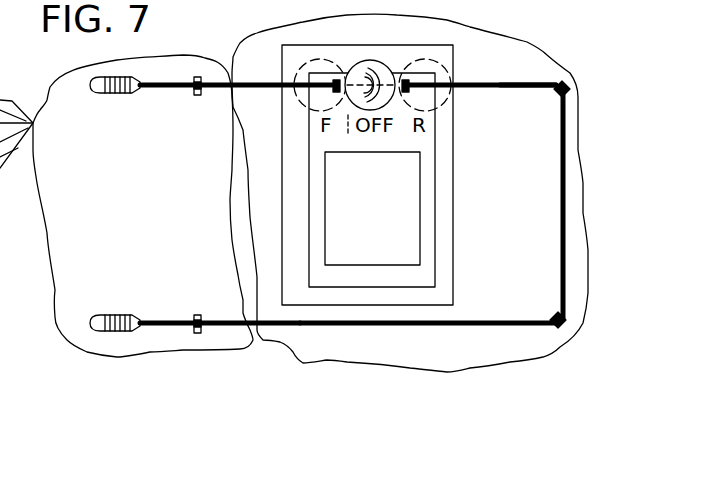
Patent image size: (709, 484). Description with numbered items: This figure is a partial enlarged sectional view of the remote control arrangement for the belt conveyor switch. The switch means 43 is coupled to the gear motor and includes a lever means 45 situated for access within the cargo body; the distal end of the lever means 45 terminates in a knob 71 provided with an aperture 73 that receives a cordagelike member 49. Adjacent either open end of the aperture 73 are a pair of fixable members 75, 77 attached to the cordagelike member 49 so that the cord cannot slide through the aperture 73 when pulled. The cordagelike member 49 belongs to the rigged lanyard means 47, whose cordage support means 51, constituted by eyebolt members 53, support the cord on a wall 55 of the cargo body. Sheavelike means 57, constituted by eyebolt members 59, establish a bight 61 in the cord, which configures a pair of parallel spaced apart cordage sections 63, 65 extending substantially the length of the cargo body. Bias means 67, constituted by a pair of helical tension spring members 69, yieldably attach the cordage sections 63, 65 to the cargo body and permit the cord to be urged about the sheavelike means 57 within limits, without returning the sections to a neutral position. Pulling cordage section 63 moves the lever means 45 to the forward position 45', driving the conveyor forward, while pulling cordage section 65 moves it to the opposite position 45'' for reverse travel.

The switch means 43 is at (377, 215).
The lever means 45 is at (420, 56).
The lever means in forward position 45' is at (325, 65).
The lever means in reverse position 45'' is at (451, 79).
The rigged lanyard means 47 is at (173, 336).
The cordagelike member 49 is at (524, 84).
The cordage support means 51 is at (162, 110).
The eyebolt members 53 is at (200, 97).
The wall 55 is at (125, 140).
The sheavelike means 57 is at (618, 72).
The eyebolt members 59 is at (568, 92).
The bight 61 is at (563, 222).
The cordage section 63 is at (490, 88).
The cordage section 65 is at (467, 321).
The bias means 67 is at (50, 83).
The helical tension spring member 69 is at (123, 77).
The knob 71 is at (367, 73).
The aperture 73 is at (372, 180).
The fixable member 75 is at (338, 91).
The fixable member 77 is at (405, 93).